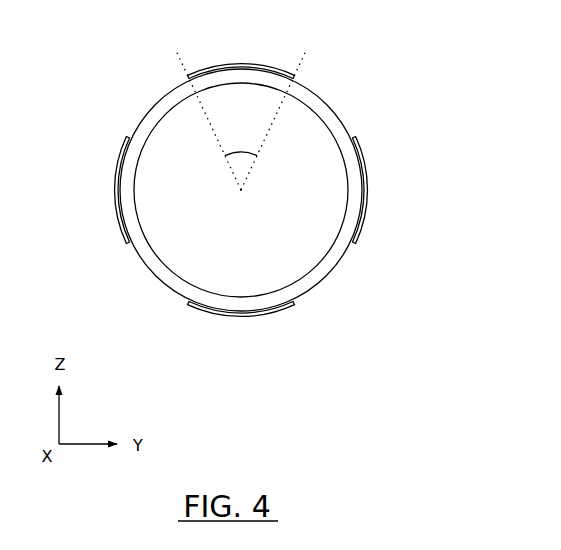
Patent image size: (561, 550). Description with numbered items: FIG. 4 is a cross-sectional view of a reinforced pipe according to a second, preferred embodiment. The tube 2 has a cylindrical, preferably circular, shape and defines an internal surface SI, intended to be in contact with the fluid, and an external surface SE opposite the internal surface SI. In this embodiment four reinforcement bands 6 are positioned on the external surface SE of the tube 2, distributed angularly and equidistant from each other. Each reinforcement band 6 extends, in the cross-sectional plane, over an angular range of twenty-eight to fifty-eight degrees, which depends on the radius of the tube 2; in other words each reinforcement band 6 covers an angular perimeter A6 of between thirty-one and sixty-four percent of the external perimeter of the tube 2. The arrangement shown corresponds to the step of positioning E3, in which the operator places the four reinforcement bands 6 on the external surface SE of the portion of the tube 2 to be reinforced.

The tube 2 is at (240, 186).
The reinforcement band 6 is at (251, 67).
The angular perimeter A6 is at (214, 70).
The external surface SE is at (336, 277).
The internal surface SI is at (308, 277).
The step of positioning E3 is at (353, 408).